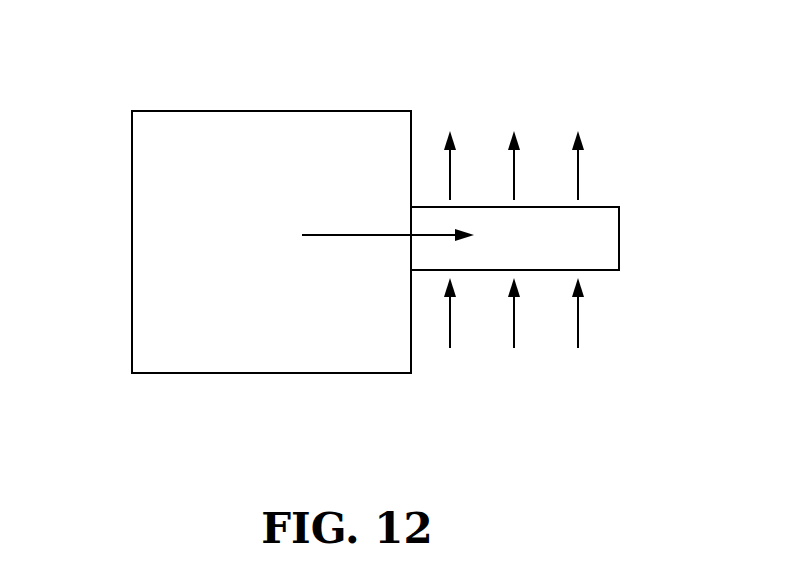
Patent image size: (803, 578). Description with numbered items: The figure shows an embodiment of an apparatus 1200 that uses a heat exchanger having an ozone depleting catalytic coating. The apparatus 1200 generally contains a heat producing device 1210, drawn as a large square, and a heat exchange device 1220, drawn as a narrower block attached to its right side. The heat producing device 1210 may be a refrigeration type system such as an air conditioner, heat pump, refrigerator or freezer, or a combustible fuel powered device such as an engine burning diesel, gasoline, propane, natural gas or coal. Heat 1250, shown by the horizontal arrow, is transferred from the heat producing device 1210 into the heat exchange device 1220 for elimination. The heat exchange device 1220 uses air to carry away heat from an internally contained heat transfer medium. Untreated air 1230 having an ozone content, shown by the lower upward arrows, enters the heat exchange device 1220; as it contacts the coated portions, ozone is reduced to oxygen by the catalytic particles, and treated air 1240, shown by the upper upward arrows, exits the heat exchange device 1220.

The apparatus 1200 is at (135, 84).
The heat producing device 1210 is at (131, 176).
The heat exchange device 1220 is at (620, 237).
The untreated air 1230 is at (583, 345).
The treated air 1240 is at (595, 180).
The heat 1250 is at (388, 227).